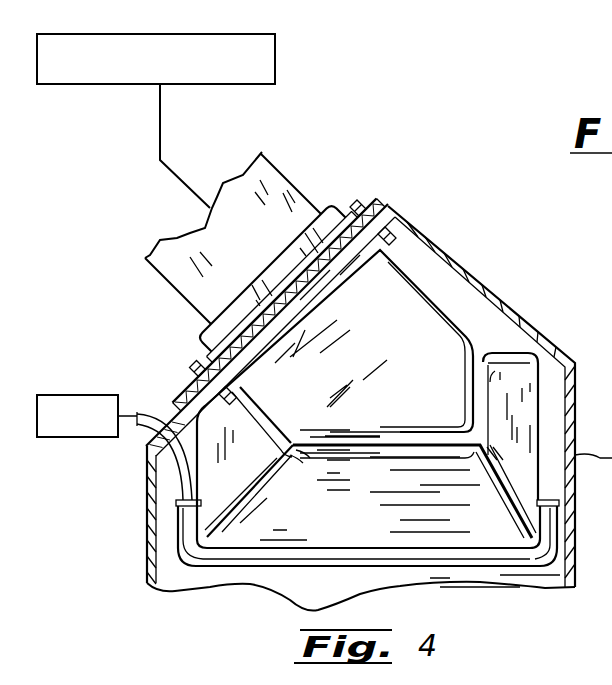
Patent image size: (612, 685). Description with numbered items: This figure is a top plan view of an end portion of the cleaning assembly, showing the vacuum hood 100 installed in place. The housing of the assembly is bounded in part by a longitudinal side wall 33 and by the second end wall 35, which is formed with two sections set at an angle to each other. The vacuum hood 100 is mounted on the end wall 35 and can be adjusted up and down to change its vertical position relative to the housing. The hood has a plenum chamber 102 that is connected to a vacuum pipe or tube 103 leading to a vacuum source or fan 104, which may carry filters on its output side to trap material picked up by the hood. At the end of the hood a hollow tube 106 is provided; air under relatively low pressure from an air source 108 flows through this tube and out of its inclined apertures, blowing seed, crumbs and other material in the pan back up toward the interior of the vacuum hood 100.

The longitudinal side wall 33 is at (147, 548).
The second end wall 35 is at (402, 216).
The vacuum hood 100 is at (445, 365).
The plenum chamber 102 is at (337, 203).
The vacuum pipe or tube 103 is at (283, 178).
The vacuum source or fan 104 is at (183, 34).
The tube 106 is at (212, 566).
The air source 108 is at (62, 394).